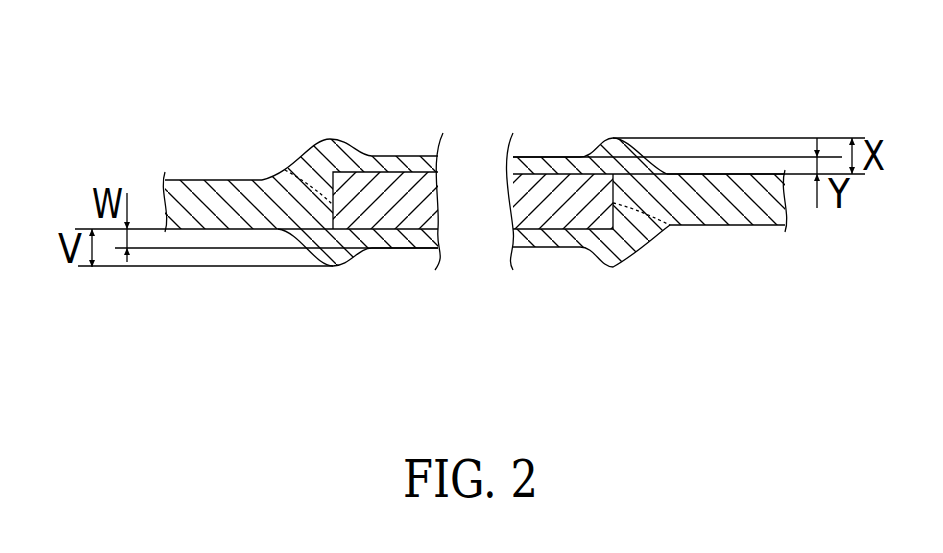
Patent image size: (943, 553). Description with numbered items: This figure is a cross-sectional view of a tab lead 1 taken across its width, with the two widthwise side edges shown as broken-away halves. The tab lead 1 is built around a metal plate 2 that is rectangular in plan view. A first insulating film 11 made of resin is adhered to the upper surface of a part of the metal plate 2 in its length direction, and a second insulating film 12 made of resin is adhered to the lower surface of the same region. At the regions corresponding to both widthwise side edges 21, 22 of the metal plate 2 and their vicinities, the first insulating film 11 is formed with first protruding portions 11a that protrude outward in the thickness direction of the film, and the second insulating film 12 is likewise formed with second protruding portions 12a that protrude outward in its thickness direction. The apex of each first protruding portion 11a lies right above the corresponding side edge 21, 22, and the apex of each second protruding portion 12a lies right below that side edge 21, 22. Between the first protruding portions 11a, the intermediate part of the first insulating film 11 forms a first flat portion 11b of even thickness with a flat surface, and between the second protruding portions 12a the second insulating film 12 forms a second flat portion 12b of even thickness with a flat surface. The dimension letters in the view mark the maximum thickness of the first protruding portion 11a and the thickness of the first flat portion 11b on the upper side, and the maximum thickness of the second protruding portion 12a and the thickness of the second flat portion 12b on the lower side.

The tab lead 1 is at (726, 61).
The metal plate 2 is at (387, 205).
The first insulating film 11 is at (555, 158).
The first protruding portion 11a is at (332, 139).
The first flat portion 11b is at (415, 157).
The second insulating film 12 is at (540, 243).
The second protruding portion 12a is at (332, 266).
The second flat portion 12b is at (418, 247).
The side edge 21 is at (292, 173).
The side edge 22 is at (662, 224).